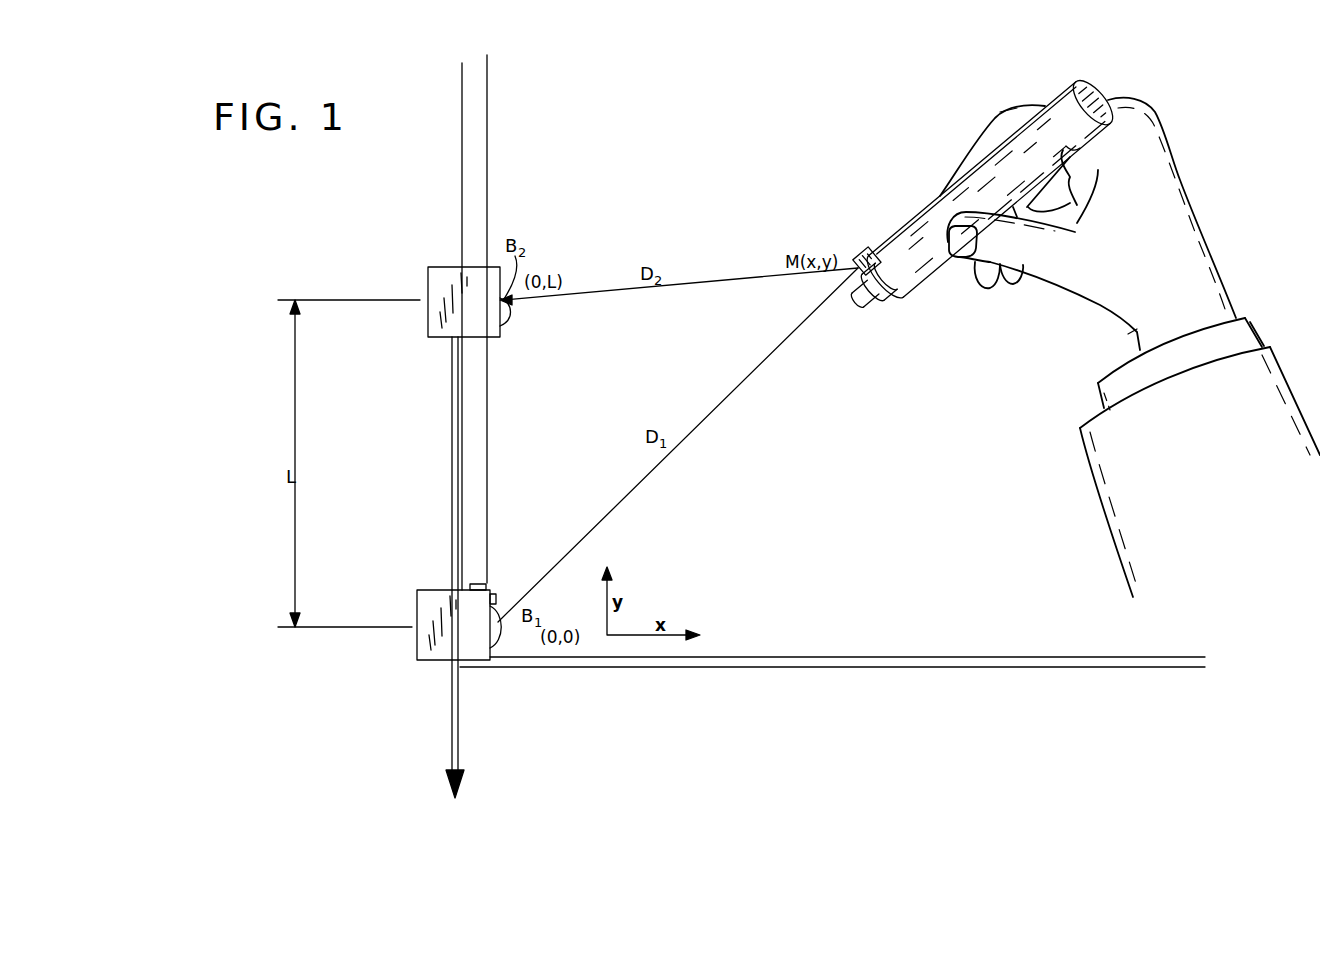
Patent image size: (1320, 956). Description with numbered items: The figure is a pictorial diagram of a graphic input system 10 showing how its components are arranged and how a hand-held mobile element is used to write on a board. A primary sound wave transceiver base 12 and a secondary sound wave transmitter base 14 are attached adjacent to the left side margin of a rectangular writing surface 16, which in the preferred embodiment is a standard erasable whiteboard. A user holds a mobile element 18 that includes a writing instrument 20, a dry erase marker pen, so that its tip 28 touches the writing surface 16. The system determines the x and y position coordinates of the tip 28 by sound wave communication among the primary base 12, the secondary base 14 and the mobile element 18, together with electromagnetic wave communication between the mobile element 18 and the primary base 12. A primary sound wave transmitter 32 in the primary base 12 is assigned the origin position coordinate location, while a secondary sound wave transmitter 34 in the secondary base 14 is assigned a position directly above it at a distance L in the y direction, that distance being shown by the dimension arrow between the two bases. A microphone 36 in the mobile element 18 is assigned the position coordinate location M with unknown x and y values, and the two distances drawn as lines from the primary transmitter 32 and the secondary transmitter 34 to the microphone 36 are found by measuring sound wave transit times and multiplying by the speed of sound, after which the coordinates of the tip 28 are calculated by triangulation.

The graphic input system 10 is at (414, 107).
The primary sound wave transceiver base 12 is at (425, 607).
The secondary sound wave transmitter base 14 is at (430, 293).
The writing surface 16 is at (588, 118).
The mobile element 18 is at (911, 212).
The writing instrument 20 is at (894, 299).
The tip 28 is at (866, 306).
The primary sound wave transmitter 32 is at (518, 616).
The secondary sound wave transmitter 34 is at (500, 323).
The microphone 36 is at (858, 258).